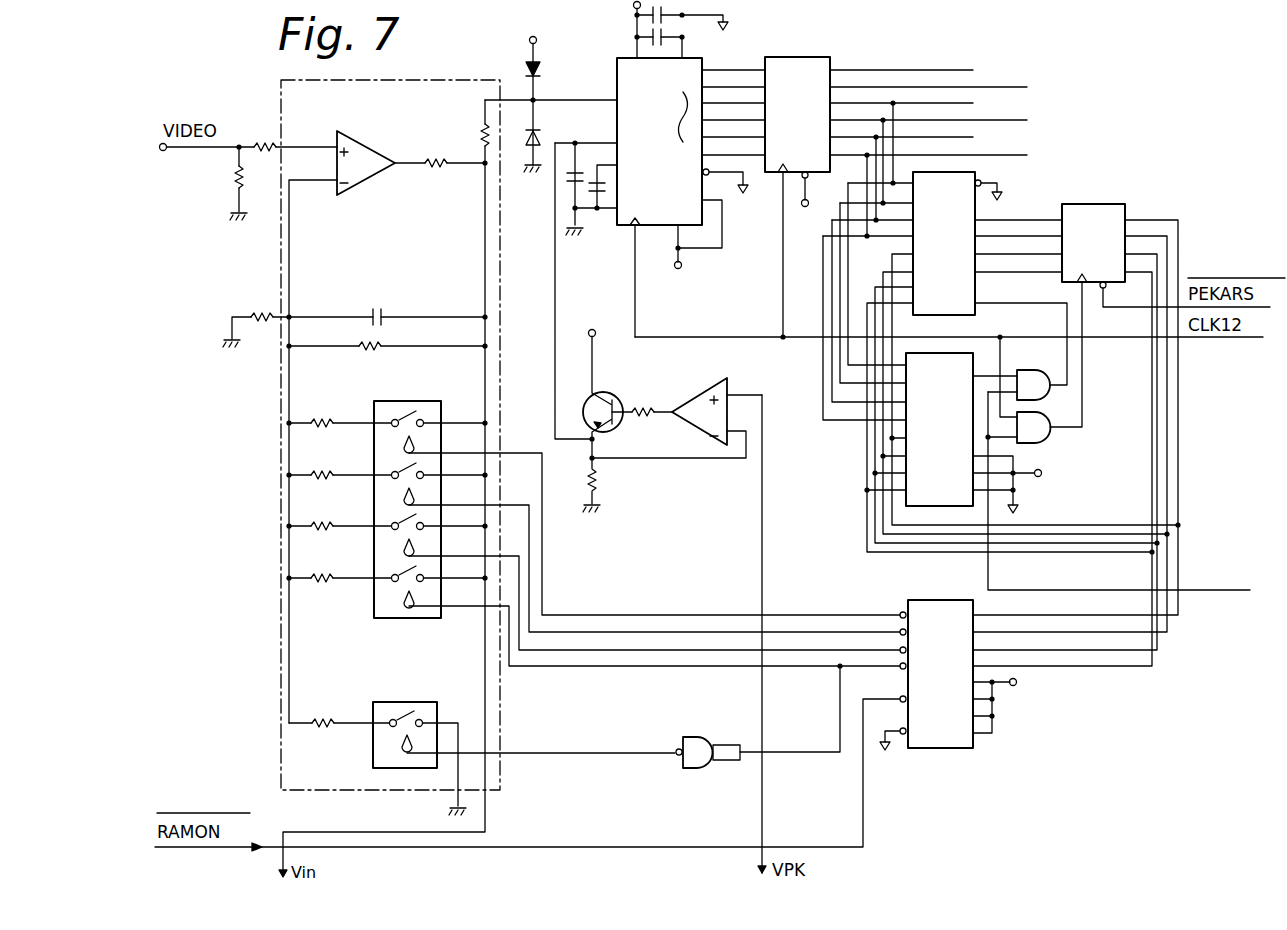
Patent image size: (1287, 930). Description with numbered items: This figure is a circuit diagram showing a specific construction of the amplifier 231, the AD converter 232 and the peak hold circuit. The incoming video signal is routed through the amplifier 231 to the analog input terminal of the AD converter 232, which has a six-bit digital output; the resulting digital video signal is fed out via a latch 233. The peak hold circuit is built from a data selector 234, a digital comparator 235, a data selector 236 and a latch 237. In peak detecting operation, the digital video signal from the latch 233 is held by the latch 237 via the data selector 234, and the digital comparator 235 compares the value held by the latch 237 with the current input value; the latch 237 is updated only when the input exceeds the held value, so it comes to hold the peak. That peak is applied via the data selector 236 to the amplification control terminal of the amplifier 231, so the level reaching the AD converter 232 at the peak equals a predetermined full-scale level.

The amplifier 231 is at (500, 700).
The AD converter 232 is at (617, 85).
The latch 233 is at (800, 57).
The data selector 234 is at (972, 316).
The digital comparator 235 is at (906, 510).
The data selector 236 is at (930, 600).
The latch 237 is at (1108, 200).